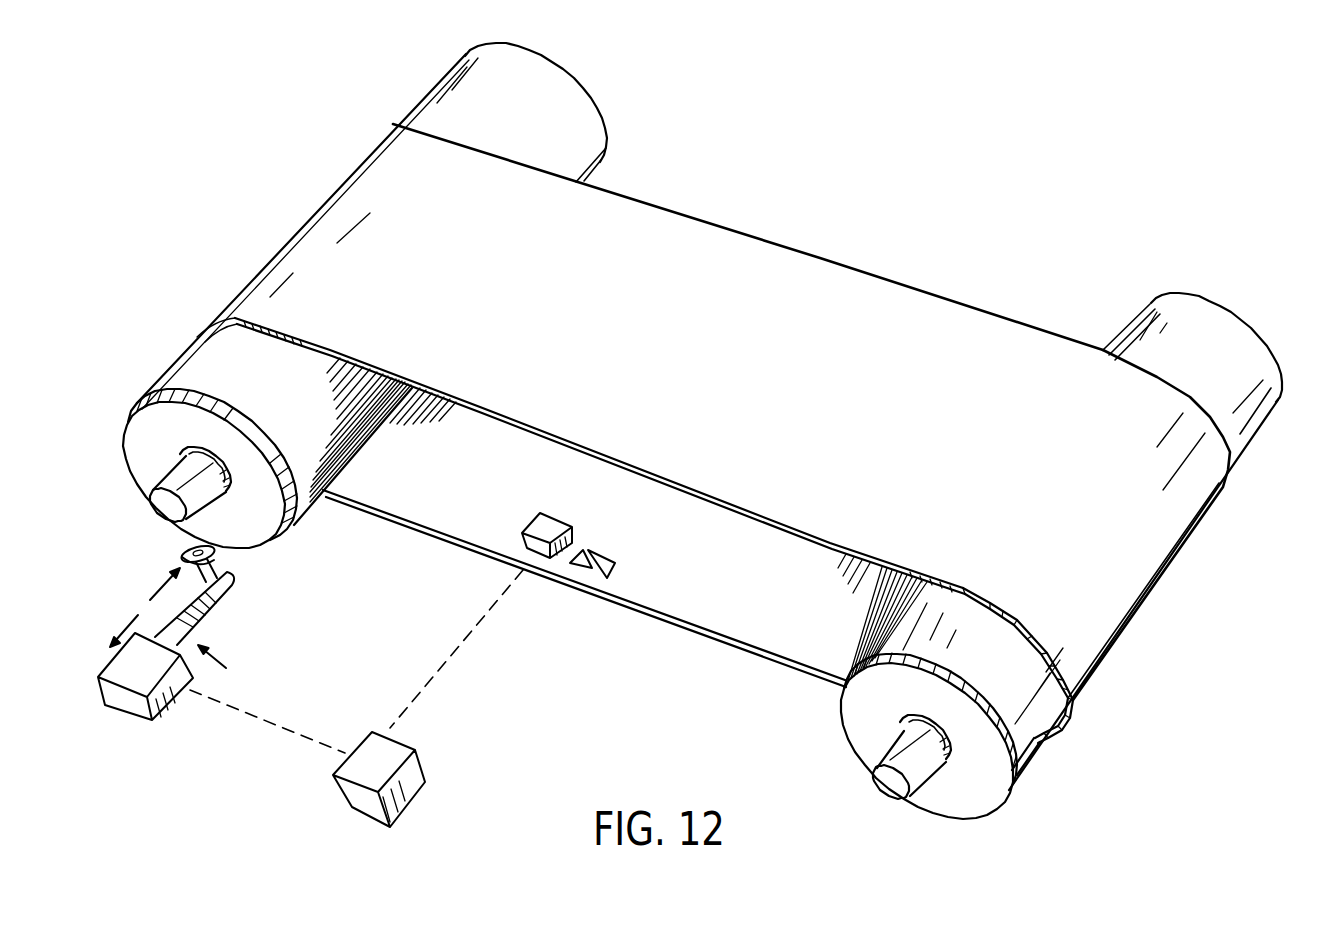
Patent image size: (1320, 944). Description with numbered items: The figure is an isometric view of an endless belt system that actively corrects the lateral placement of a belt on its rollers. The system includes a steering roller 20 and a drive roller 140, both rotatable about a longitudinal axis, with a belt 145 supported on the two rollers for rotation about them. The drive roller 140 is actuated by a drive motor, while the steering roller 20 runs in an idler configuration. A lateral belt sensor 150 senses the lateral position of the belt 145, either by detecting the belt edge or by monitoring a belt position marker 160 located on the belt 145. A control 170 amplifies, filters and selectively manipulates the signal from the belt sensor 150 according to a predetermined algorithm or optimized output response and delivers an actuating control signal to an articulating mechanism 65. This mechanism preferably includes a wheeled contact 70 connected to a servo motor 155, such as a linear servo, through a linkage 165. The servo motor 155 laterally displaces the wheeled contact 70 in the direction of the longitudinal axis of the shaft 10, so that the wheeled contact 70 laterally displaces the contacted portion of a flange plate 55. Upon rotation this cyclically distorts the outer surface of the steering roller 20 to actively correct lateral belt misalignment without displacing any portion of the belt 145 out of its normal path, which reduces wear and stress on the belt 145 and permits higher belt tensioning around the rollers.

The shaft 10 is at (165, 480).
The steering roller 20 is at (207, 362).
The flange plate 55 is at (160, 420).
The articulating mechanism 65 is at (226, 668).
The wheeled contact 70 is at (180, 553).
The drive roller 140 is at (1025, 723).
The belt 145 is at (838, 278).
The lateral belt sensor 150 is at (549, 562).
The servo motor 155 is at (160, 723).
The belt position marker 160 is at (615, 578).
The linkage 165 is at (230, 590).
The control 170 is at (370, 805).